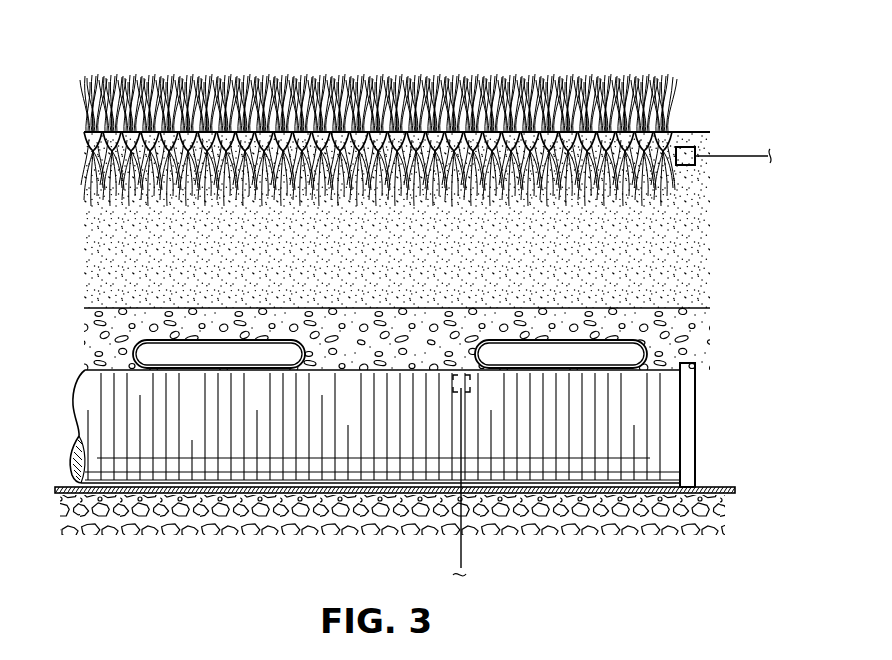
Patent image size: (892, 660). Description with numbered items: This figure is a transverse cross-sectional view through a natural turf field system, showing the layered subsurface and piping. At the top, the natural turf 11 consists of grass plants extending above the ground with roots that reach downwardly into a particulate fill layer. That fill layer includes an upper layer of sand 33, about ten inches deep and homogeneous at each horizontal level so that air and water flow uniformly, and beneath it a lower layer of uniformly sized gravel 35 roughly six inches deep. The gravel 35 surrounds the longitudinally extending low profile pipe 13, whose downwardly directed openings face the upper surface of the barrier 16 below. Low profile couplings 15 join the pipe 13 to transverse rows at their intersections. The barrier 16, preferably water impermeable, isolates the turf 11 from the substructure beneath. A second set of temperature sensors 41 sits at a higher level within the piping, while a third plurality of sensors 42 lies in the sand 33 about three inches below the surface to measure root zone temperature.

The natural turf 11 is at (106, 80).
The upper layer of sand 33 is at (110, 230).
The lower layer of gravel 35 is at (93, 347).
The low profile coupling 15 is at (233, 340).
The longitudinally extending pipe 13 is at (670, 400).
The second set of temperature sensors 41 is at (452, 388).
The third plurality of temperature sensors 42 is at (686, 148).
The barrier 16 is at (712, 487).